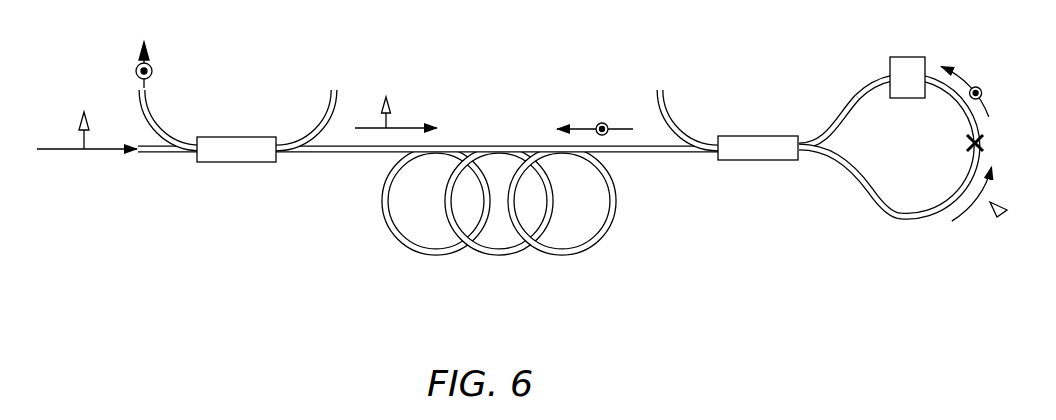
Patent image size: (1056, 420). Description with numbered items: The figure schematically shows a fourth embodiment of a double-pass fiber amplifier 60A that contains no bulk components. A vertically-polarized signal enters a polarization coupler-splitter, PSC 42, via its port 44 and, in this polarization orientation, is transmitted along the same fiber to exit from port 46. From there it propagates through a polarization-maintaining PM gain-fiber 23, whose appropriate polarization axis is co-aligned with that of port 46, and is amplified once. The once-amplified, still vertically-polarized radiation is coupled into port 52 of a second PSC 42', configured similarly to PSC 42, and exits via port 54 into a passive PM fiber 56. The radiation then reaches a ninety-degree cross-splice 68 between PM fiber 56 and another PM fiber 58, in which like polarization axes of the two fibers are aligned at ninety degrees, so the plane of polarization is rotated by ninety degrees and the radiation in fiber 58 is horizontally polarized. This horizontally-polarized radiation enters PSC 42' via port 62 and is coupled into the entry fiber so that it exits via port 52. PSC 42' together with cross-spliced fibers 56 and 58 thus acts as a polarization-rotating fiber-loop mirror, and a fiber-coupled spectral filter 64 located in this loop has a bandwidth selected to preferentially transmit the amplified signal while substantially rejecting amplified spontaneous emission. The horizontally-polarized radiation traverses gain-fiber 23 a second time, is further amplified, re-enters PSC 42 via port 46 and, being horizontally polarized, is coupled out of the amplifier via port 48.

The PM gain-fiber 23 is at (517, 258).
The PSC 42 is at (235, 185).
The PSC 42' is at (749, 186).
The port 44 is at (160, 150).
The port 46 is at (318, 151).
The port 48 is at (163, 133).
The port 52 is at (685, 150).
The port 54 is at (820, 160).
The passive PM fiber 56 is at (897, 222).
The PM fiber 58 is at (852, 88).
The double-pass fiber amplifier 60A is at (265, 292).
The port 62 is at (822, 133).
The spectral filter 64 is at (890, 68).
The 90° cross-splice 68 is at (965, 143).